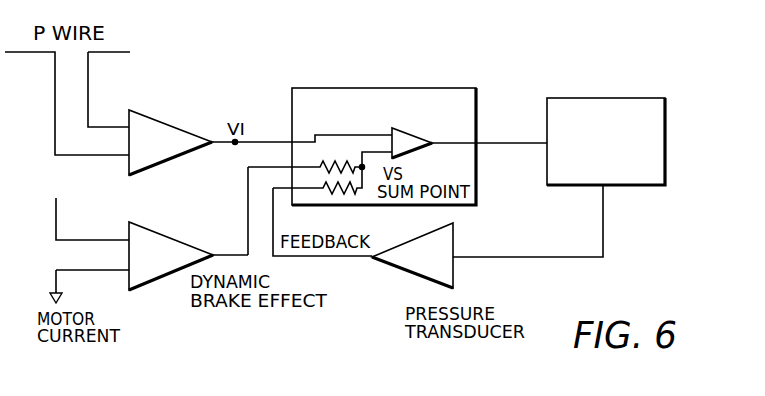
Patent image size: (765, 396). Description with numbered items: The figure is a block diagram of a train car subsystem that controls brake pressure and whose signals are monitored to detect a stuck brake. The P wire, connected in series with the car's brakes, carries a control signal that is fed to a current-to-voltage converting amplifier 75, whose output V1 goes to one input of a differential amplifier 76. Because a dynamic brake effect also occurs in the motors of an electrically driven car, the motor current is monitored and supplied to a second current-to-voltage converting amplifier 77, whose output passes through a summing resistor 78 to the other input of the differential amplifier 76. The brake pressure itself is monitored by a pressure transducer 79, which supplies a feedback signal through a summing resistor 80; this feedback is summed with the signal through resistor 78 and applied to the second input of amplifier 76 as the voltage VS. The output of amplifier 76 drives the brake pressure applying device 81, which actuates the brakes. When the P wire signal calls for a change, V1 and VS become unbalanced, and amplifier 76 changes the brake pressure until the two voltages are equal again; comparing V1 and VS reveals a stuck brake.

The current-to-voltage converting amplifier 75 is at (143, 112).
The differential amplifier 76 is at (402, 128).
The current-to-voltage converting amplifier 77 is at (143, 284).
The summing resistor 78 is at (323, 163).
The pressure transducer 79 is at (405, 270).
The summing resistor 80 is at (333, 190).
The brake pressure applying device 81 is at (630, 98).